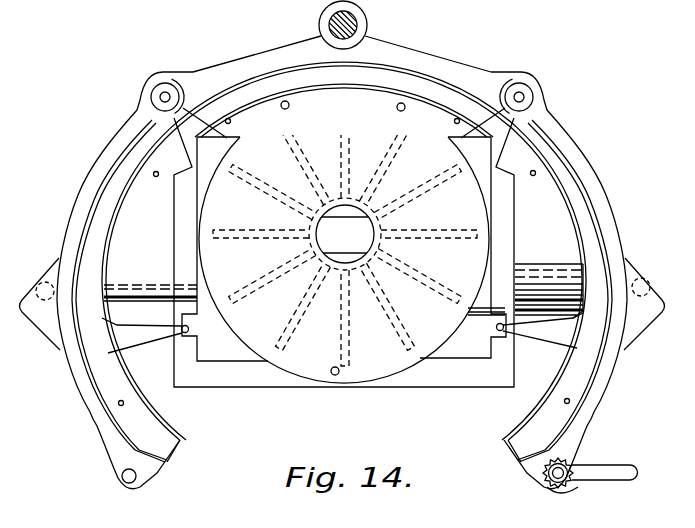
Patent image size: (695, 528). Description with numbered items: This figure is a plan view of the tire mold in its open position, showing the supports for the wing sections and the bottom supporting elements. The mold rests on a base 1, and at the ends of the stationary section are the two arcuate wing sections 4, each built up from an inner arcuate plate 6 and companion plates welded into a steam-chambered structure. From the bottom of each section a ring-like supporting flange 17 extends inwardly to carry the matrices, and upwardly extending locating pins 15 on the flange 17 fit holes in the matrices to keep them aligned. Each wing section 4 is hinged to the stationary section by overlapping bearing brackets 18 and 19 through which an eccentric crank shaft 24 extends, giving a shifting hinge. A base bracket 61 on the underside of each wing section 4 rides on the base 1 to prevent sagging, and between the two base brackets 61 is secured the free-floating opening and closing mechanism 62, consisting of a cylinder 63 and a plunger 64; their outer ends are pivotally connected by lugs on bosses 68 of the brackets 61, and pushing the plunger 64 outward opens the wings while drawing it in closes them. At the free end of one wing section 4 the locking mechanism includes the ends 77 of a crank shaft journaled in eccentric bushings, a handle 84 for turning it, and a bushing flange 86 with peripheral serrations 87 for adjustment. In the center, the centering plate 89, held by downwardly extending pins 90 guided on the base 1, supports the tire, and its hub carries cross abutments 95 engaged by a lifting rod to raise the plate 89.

The base 1 is at (243, 381).
The wing section 4 is at (84, 211).
The inner arcuate plate 6 is at (412, 72).
The locating pin 15 is at (231, 124).
The supporting flange 17 is at (372, 80).
The bearing bracket 18 is at (124, 134).
The bearing bracket 19 is at (194, 72).
The crank shaft 24 is at (160, 97).
The base bracket 61 is at (148, 340).
The mold opening or closing mechanism 62 is at (530, 259).
The cylinder 63 is at (552, 263).
The plunger 64 is at (140, 291).
The boss 68 is at (36, 289).
The crank shaft end 77 is at (558, 482).
The handle 84 is at (624, 470).
The flange 86 is at (578, 486).
The serrations 87 is at (545, 481).
The centering plate 89 is at (394, 372).
The pin 90 is at (289, 108).
The cross abutment 95 is at (340, 223).